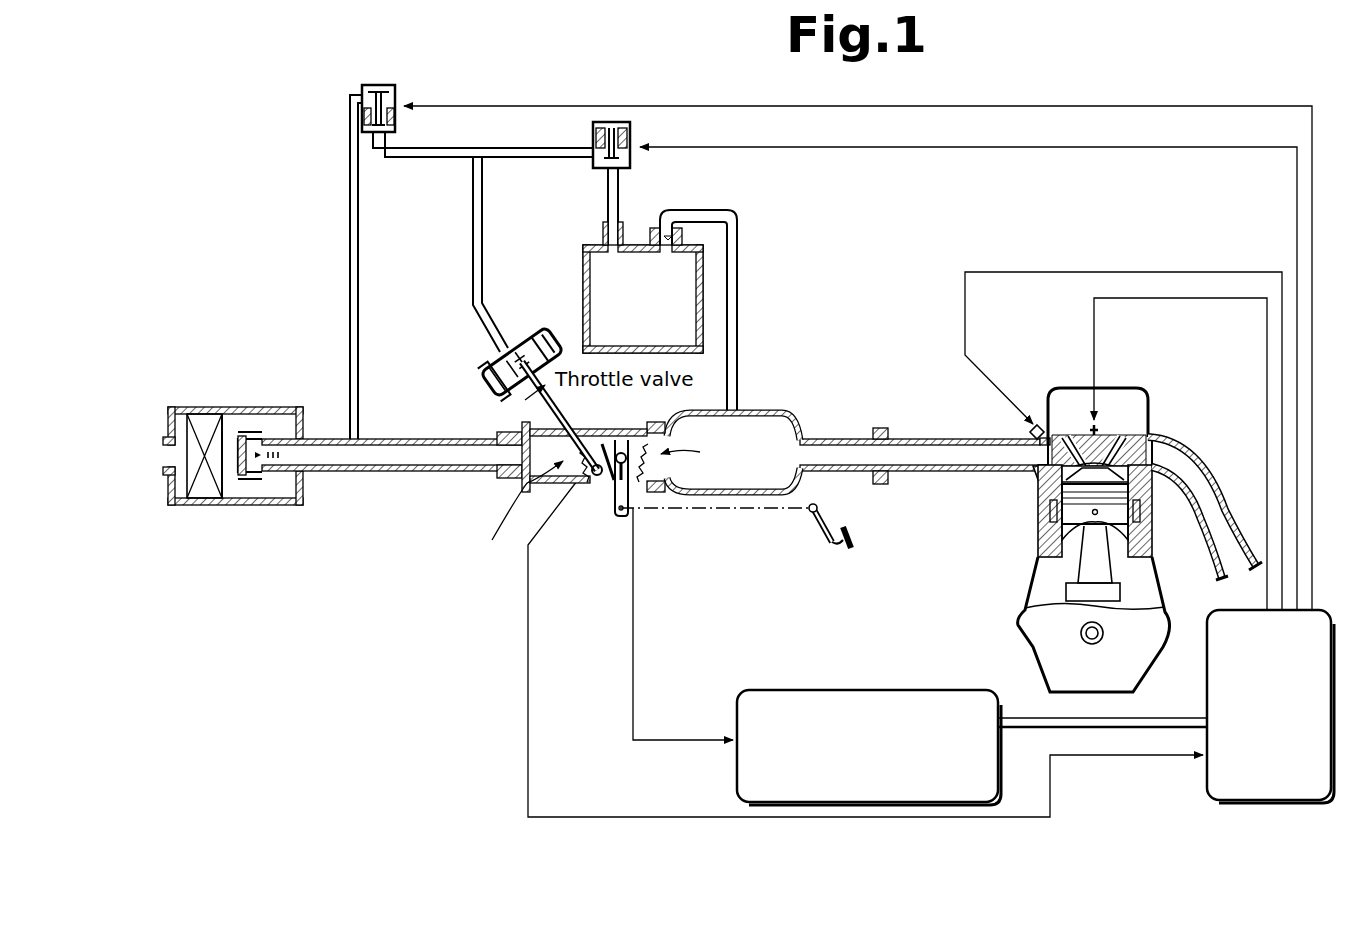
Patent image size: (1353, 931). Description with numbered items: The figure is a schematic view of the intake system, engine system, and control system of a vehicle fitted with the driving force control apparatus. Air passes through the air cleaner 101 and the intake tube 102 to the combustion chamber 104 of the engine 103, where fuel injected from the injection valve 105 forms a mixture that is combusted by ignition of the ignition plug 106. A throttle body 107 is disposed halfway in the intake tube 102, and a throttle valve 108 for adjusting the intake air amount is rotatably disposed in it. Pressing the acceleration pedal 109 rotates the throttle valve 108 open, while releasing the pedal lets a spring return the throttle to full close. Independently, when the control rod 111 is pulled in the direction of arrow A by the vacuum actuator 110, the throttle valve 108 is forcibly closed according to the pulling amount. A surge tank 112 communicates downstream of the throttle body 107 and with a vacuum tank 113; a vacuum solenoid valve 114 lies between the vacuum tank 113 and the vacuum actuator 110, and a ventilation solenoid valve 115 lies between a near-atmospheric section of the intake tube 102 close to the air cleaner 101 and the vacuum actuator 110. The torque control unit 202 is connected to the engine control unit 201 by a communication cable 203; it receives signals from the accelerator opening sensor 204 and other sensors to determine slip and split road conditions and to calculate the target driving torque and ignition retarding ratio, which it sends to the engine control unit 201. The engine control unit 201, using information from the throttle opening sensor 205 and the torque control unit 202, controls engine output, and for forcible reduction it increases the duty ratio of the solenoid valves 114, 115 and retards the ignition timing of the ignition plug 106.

The air cleaner 101 is at (258, 407).
The intake tube 102 is at (932, 410).
The engine 103 is at (1012, 627).
The combustion chamber 104 is at (1040, 498).
The injection valve 105 is at (1037, 425).
The ignition plug 106 is at (1133, 405).
The throttle body 107 is at (733, 412).
The throttle valve 108 is at (615, 440).
The acceleration pedal 109 is at (832, 534).
The vacuum actuator 110 is at (478, 375).
The control rod 111 is at (540, 336).
The surge tank 112 is at (792, 414).
The vacuum tank 113 is at (583, 292).
The vacuum solenoid valve 114 is at (644, 166).
The ventilation solenoid valve 115 is at (342, 108).
The engine control unit 201 is at (1205, 772).
The torque control unit 202 is at (737, 700).
The communication cable 203 is at (1172, 717).
The accelerator opening sensor 204 is at (707, 454).
The throttle opening sensor 205 is at (512, 518).